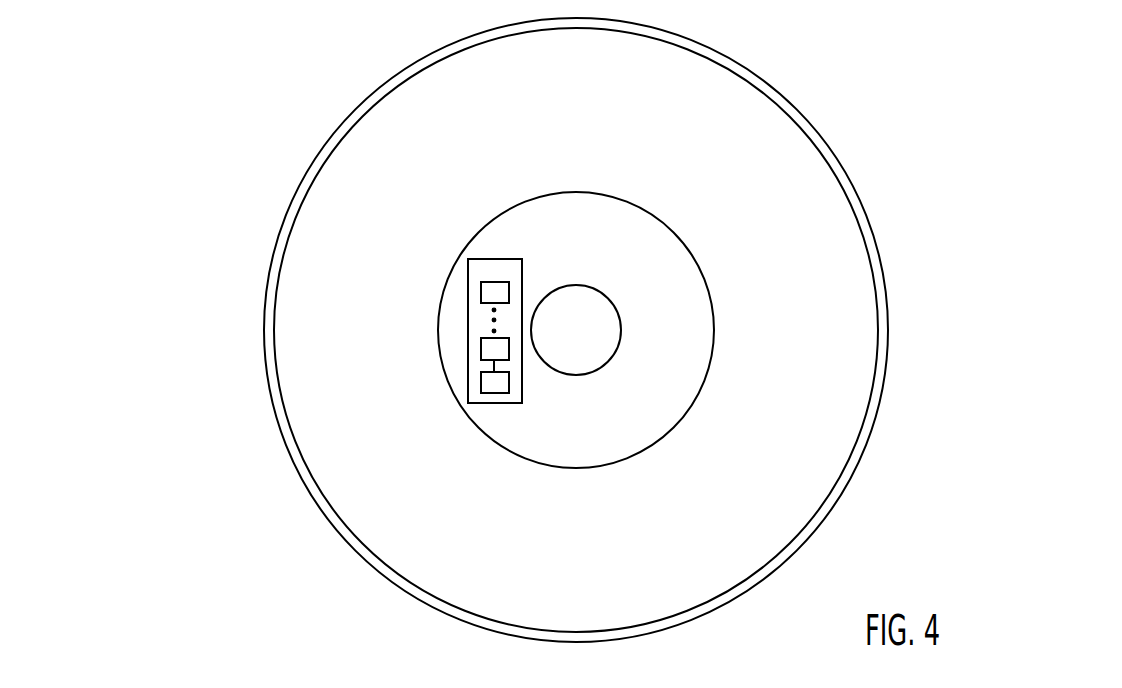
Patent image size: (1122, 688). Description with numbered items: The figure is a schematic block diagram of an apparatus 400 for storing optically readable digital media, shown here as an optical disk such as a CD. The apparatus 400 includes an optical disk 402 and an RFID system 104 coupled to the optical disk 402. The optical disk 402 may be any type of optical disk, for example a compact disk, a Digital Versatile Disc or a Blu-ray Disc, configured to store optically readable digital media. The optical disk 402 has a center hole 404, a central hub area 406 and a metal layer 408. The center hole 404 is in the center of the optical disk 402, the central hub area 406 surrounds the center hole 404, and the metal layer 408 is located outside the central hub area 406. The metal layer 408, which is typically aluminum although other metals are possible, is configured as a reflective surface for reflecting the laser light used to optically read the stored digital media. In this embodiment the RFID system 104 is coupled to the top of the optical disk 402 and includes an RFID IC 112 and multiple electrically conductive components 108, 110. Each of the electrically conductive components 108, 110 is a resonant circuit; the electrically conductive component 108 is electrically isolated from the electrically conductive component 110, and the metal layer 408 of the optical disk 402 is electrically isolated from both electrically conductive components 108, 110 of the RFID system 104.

The apparatus 400 is at (856, 101).
The optical disk 402 is at (860, 198).
The center hole 404 is at (594, 343).
The central hub area 406 is at (673, 299).
The metal layer 408 is at (810, 463).
The RFID system 104 is at (489, 259).
The electrically conductive component 108 is at (492, 295).
The electrically conductive component 110 is at (483, 352).
The RFID IC 112 is at (483, 387).